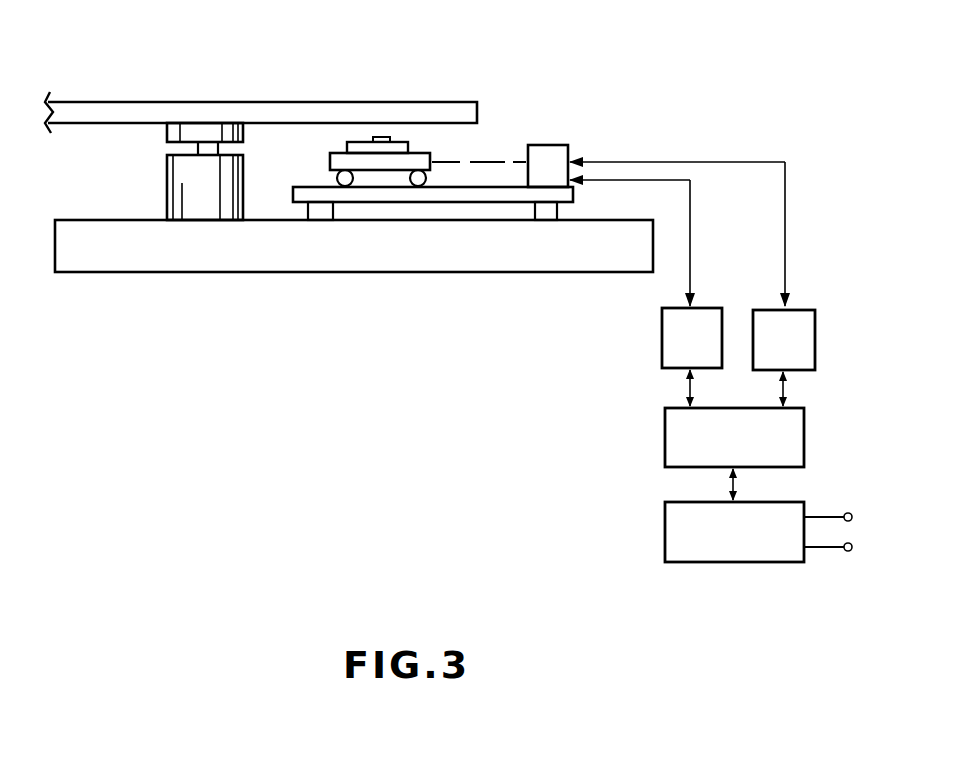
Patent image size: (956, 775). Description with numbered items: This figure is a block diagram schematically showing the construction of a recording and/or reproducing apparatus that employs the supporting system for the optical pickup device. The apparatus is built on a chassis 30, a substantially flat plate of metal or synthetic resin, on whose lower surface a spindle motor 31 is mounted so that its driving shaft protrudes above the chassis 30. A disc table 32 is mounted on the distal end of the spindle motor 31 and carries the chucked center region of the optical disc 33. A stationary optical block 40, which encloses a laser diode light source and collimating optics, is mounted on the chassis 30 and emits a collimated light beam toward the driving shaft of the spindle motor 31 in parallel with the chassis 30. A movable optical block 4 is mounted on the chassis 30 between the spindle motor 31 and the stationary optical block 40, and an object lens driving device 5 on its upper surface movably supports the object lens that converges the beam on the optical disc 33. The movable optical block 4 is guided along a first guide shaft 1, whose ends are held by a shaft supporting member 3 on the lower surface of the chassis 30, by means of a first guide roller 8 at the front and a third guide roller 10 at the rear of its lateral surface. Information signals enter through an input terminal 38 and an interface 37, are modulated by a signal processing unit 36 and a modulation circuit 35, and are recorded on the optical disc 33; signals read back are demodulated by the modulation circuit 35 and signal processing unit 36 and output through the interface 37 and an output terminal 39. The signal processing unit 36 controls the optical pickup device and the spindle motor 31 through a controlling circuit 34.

The first guide shaft 1 is at (487, 197).
The shaft supporting member 3 is at (317, 215).
The movable optical block 4 is at (341, 150).
The object lens driving device 5 is at (395, 141).
The first guide roller 8 is at (351, 179).
The third guide roller 10 is at (413, 188).
The chassis 30 is at (593, 272).
The spindle motor 31 is at (167, 191).
The disc table 32 is at (166, 131).
The optical disc 33 is at (186, 101).
The controlling circuit 34 is at (713, 308).
The modulation circuit 35 is at (808, 310).
The signal processing unit 36 is at (665, 438).
The interface 37 is at (665, 532).
The input terminal 38 is at (846, 512).
The output terminal 39 is at (845, 552).
The stationary optical block 40 is at (543, 145).